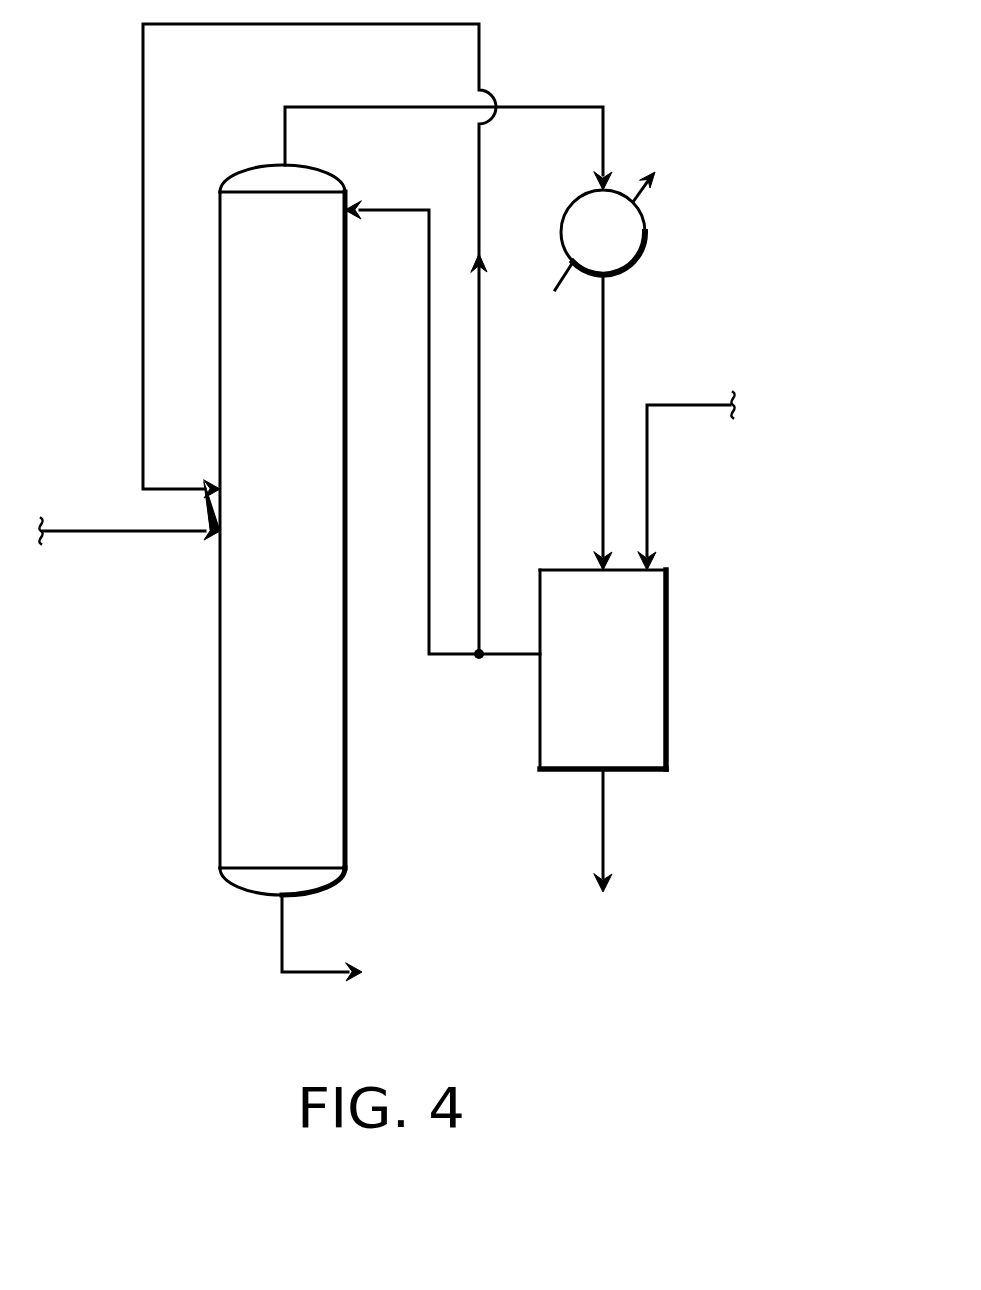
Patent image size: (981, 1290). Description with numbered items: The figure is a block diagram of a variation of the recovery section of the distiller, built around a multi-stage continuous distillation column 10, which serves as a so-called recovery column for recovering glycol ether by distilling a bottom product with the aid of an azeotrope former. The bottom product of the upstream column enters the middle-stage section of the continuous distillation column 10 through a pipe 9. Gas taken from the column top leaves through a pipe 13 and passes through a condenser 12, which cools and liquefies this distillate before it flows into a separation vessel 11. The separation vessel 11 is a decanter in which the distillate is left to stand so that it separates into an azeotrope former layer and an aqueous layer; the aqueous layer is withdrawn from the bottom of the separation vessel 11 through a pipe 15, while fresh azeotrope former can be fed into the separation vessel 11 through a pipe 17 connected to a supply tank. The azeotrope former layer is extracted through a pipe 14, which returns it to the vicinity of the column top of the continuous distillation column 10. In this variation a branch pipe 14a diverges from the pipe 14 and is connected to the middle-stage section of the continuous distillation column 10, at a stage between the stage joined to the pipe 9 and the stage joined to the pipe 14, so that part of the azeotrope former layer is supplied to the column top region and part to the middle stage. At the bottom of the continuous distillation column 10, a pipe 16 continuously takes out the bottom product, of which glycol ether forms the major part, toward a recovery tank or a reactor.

The pipe 9 is at (127, 531).
The continuous distillation column 10 is at (220, 775).
The separation vessel 11 is at (668, 627).
The condenser 12 is at (648, 247).
The pipe 13 is at (545, 107).
The pipe 14 is at (429, 372).
The branch pipe 14a is at (479, 400).
The pipe 15 is at (603, 795).
The pipe 16 is at (323, 972).
The pipe 17 is at (682, 405).